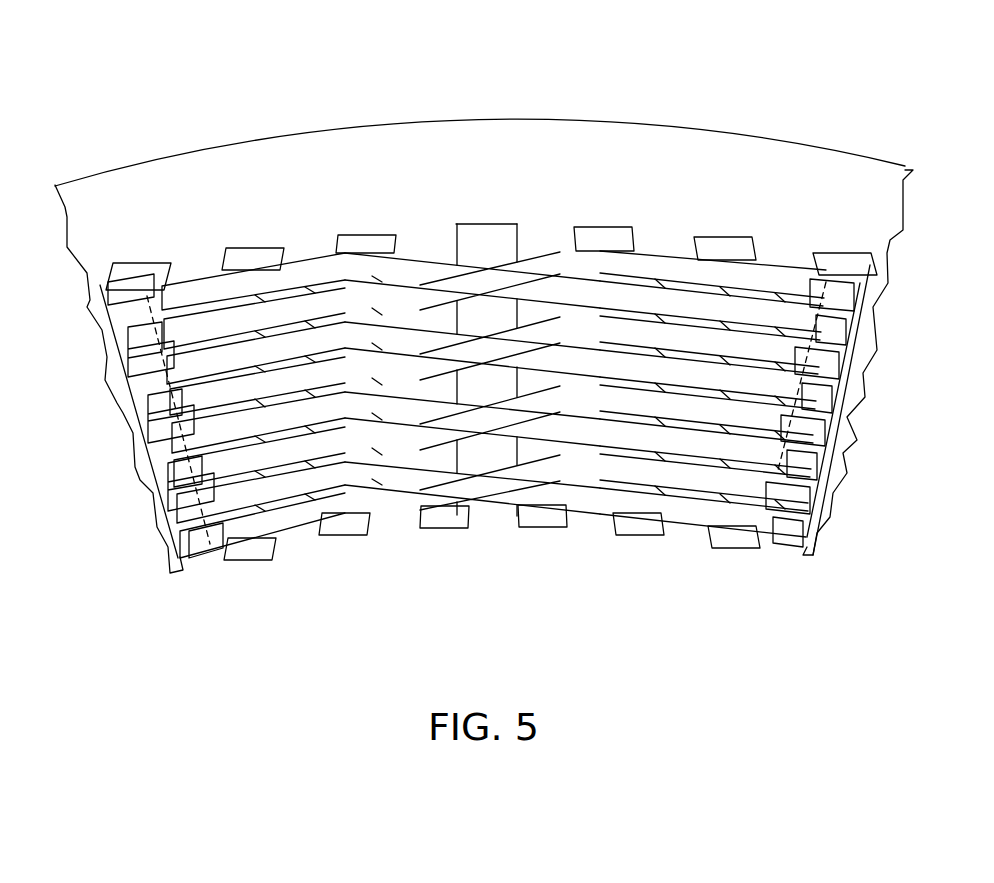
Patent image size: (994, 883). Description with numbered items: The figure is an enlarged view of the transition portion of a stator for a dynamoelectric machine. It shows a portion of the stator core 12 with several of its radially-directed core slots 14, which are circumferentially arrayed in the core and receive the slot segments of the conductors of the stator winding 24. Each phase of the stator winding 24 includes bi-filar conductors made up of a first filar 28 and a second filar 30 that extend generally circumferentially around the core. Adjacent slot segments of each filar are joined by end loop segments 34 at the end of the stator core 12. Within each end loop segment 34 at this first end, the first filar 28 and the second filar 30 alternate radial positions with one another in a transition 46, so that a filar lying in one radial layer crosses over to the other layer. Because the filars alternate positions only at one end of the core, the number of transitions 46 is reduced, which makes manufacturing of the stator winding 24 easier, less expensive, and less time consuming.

The stator core 12 is at (510, 120).
The core slot 14 is at (295, 534).
The stator winding 24 is at (395, 530).
The first filar 28 is at (138, 304).
The second filar 30 is at (846, 292).
The end loop segment 34 is at (540, 292).
The transition 46 is at (418, 645).